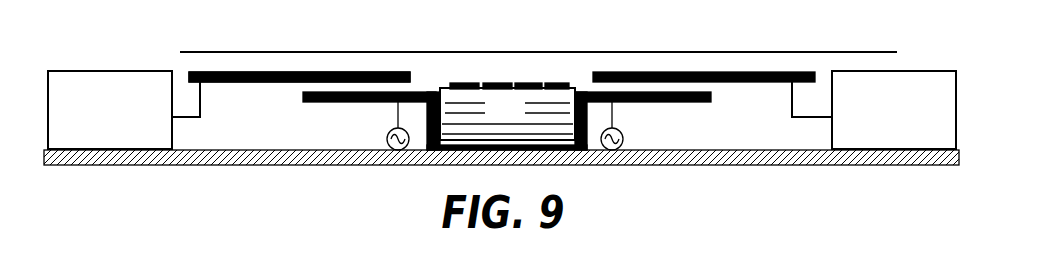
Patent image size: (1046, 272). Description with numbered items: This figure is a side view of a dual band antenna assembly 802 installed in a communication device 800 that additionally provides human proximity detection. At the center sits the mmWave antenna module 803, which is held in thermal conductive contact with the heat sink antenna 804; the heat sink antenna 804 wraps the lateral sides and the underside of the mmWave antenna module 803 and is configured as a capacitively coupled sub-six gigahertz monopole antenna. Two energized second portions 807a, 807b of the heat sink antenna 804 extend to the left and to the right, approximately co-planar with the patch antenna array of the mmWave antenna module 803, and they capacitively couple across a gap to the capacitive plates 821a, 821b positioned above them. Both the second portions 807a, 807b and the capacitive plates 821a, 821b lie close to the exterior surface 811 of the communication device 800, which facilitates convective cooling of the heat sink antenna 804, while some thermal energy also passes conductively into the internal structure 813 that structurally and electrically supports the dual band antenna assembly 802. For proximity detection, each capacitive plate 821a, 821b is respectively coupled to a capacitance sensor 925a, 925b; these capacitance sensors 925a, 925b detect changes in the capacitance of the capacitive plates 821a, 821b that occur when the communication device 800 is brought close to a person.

The communication device 800 is at (246, 51).
The exterior surface 811 is at (322, 52).
The capacitive plate 821a is at (386, 72).
The capacitive plate 821b is at (750, 72).
The dual band antenna assembly 802 is at (324, 112).
The heat sink antenna 804 is at (707, 104).
The mmWave antenna module 803 is at (489, 119).
The second portion 807a is at (262, 239).
The second portion 807b is at (665, 104).
The internal structure 813 is at (353, 167).
The capacitance sensor 925a is at (89, 143).
The capacitance sensor 925b is at (873, 143).